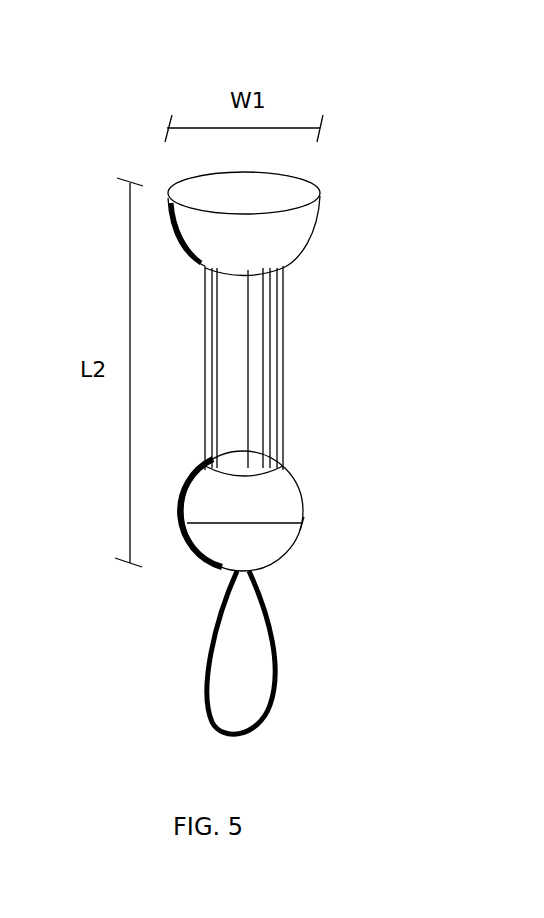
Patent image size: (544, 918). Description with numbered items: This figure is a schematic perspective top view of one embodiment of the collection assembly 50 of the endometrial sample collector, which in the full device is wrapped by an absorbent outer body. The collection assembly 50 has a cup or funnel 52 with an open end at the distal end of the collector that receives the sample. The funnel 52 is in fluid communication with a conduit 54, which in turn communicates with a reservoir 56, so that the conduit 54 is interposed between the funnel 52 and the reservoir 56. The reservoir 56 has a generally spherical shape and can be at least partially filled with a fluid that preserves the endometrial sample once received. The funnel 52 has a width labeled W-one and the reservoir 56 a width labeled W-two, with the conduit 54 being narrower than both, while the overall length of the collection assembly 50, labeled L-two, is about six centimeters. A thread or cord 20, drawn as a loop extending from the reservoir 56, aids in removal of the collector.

The collection assembly 50 is at (67, 117).
The cup or funnel 52 is at (325, 207).
The conduit 54 is at (290, 350).
The reservoir 56 is at (313, 487).
The thread or cord 20 is at (295, 660).